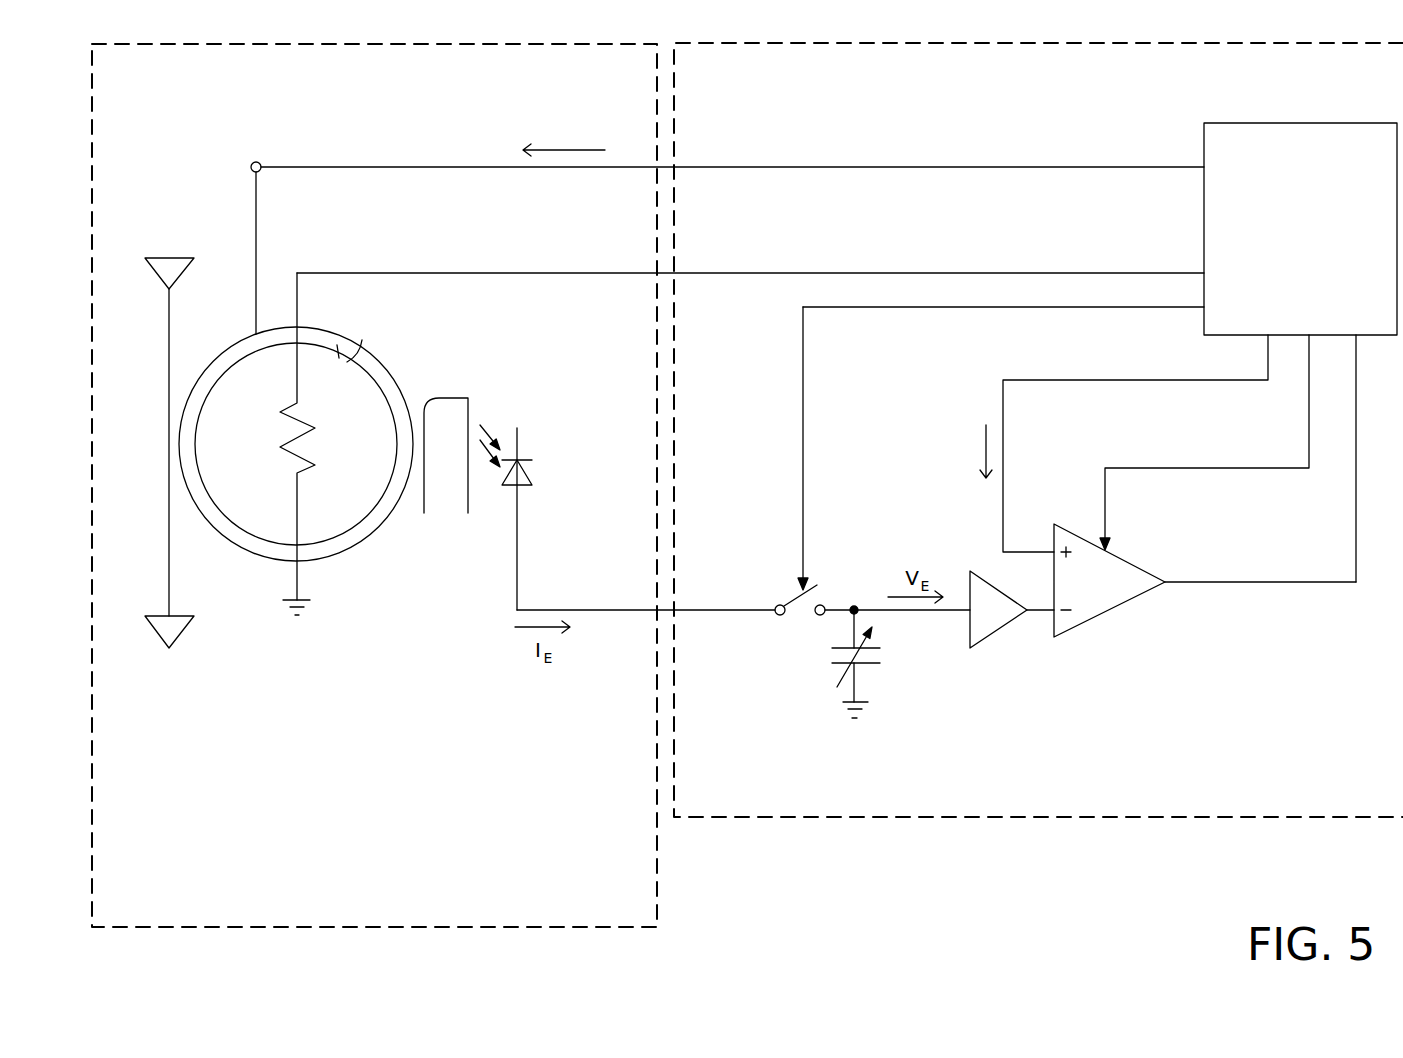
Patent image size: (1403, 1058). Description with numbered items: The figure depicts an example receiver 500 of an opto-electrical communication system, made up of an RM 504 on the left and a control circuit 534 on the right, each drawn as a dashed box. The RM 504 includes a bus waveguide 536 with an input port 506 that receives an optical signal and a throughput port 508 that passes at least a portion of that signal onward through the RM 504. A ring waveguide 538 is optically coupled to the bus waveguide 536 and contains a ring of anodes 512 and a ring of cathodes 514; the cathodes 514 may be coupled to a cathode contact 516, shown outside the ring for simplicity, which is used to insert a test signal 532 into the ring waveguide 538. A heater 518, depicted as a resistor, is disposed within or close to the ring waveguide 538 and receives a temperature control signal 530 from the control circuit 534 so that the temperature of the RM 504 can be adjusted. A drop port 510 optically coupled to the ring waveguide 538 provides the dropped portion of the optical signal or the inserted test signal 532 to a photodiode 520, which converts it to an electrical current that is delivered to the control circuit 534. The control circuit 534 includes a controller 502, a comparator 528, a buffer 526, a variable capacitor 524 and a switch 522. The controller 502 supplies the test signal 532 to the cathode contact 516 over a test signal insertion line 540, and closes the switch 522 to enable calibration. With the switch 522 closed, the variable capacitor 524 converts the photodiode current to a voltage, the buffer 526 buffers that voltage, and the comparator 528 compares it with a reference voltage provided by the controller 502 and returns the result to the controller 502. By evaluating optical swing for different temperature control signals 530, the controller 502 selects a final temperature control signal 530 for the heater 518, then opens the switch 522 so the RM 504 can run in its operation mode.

The receiver 500 is at (836, 914).
The controller 502 is at (1283, 256).
The RM 504 is at (657, 861).
The input port 506 is at (169, 270).
The throughput port 508 is at (169, 648).
The drop port 510 is at (447, 397).
The ring of anodes 512 is at (350, 533).
The ring of cathodes 514 is at (322, 563).
The cathode contact 516 is at (259, 171).
The heater 518 is at (278, 433).
The photodiode 520 is at (545, 475).
The switch 522 is at (788, 633).
The variable capacitor 524 is at (804, 662).
The buffer 526 is at (985, 633).
The comparator 528 is at (1077, 593).
The temperature control signal 530 is at (798, 273).
The test signal 532 is at (564, 124).
The control circuit 534 is at (938, 818).
The bus waveguide 536 is at (169, 380).
The ring waveguide 538 is at (346, 342).
The test signal insertion line 540 is at (833, 168).